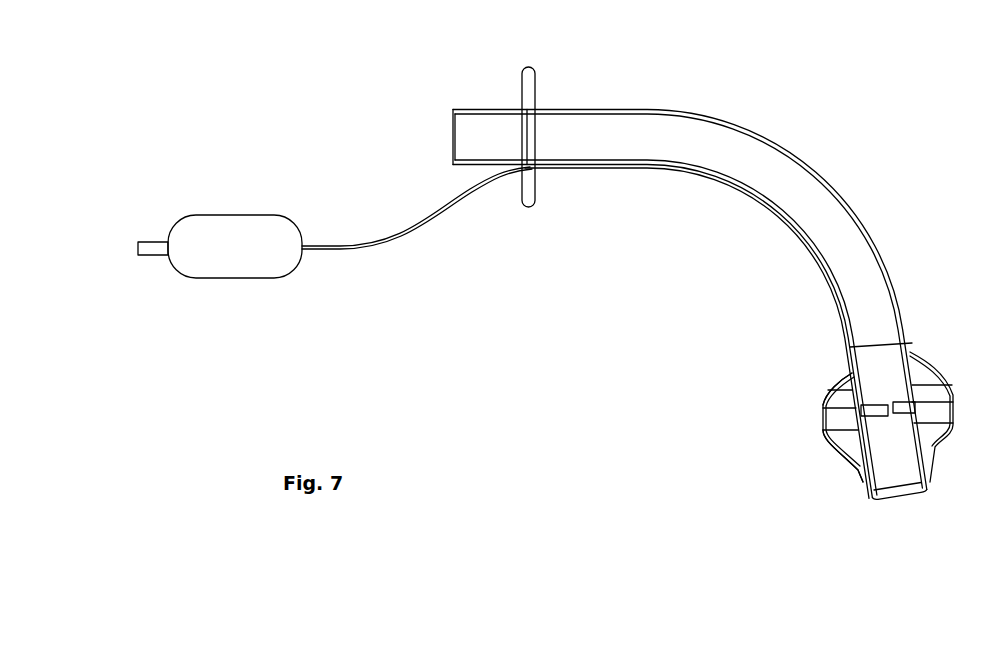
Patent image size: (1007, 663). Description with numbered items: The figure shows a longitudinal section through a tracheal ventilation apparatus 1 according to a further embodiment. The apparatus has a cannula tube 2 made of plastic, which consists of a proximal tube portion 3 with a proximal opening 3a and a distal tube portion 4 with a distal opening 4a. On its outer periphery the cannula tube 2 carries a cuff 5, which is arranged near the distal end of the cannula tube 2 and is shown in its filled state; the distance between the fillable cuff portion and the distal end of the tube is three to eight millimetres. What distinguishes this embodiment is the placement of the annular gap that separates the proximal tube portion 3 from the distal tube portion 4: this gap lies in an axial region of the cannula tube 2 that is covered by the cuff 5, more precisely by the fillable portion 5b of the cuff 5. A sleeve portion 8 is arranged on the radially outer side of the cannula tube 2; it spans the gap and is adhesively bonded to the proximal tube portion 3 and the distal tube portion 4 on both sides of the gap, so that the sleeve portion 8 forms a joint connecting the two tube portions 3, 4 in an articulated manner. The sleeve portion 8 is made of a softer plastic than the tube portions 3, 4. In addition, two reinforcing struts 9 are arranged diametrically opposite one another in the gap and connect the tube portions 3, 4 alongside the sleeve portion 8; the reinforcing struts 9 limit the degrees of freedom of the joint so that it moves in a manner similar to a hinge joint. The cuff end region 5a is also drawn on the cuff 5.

The tracheal ventilation apparatus 1 is at (812, 108).
The cannula tube 2 is at (850, 206).
The proximal tube portion 3 is at (889, 274).
The proximal opening 3a is at (453, 131).
The distal tube portion 4 is at (902, 497).
The distal opening 4a is at (890, 457).
The cuff 5 is at (838, 447).
The distal cuff end 5a is at (866, 478).
The fillable portion of the cuff 5b is at (841, 398).
The sleeve portion 8 is at (920, 393).
The reinforcing struts 9 is at (887, 410).